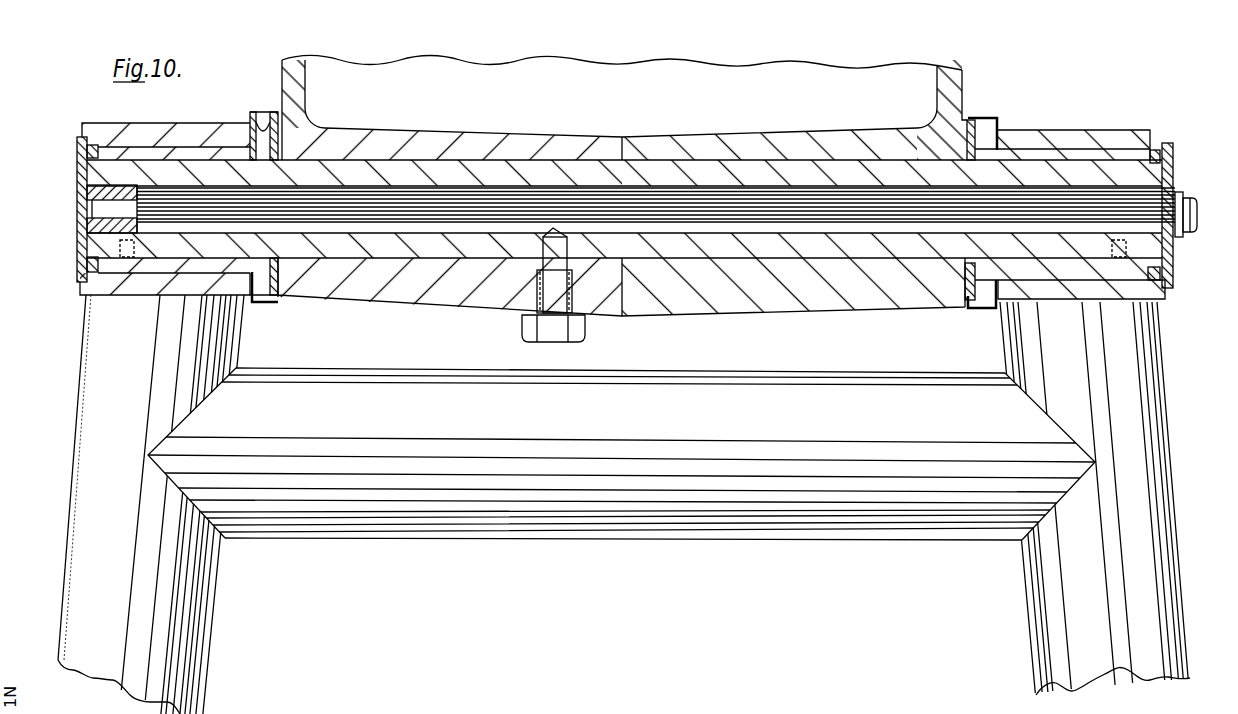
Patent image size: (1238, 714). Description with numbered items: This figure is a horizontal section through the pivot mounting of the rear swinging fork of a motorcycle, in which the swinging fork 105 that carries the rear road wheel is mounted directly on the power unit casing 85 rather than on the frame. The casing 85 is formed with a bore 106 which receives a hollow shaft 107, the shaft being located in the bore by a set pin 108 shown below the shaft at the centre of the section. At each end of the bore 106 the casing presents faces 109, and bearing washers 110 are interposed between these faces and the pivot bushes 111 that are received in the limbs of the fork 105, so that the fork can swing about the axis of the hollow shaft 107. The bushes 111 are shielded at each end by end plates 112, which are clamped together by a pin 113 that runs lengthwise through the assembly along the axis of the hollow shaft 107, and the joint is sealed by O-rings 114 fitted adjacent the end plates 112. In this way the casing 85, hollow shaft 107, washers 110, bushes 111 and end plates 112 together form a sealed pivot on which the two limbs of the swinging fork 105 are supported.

The casing 85 is at (962, 90).
The swinging fork 105 is at (102, 371).
The bore 106 is at (795, 170).
The hollow shaft 107 is at (822, 248).
The set pin 108 is at (548, 290).
The faces 109 is at (312, 120).
The bearing washers 110 is at (253, 118).
The pivot bushes 111 is at (1076, 158).
The end plates 112 is at (78, 147).
The pin 113 is at (727, 212).
The O-rings 114 is at (100, 148).